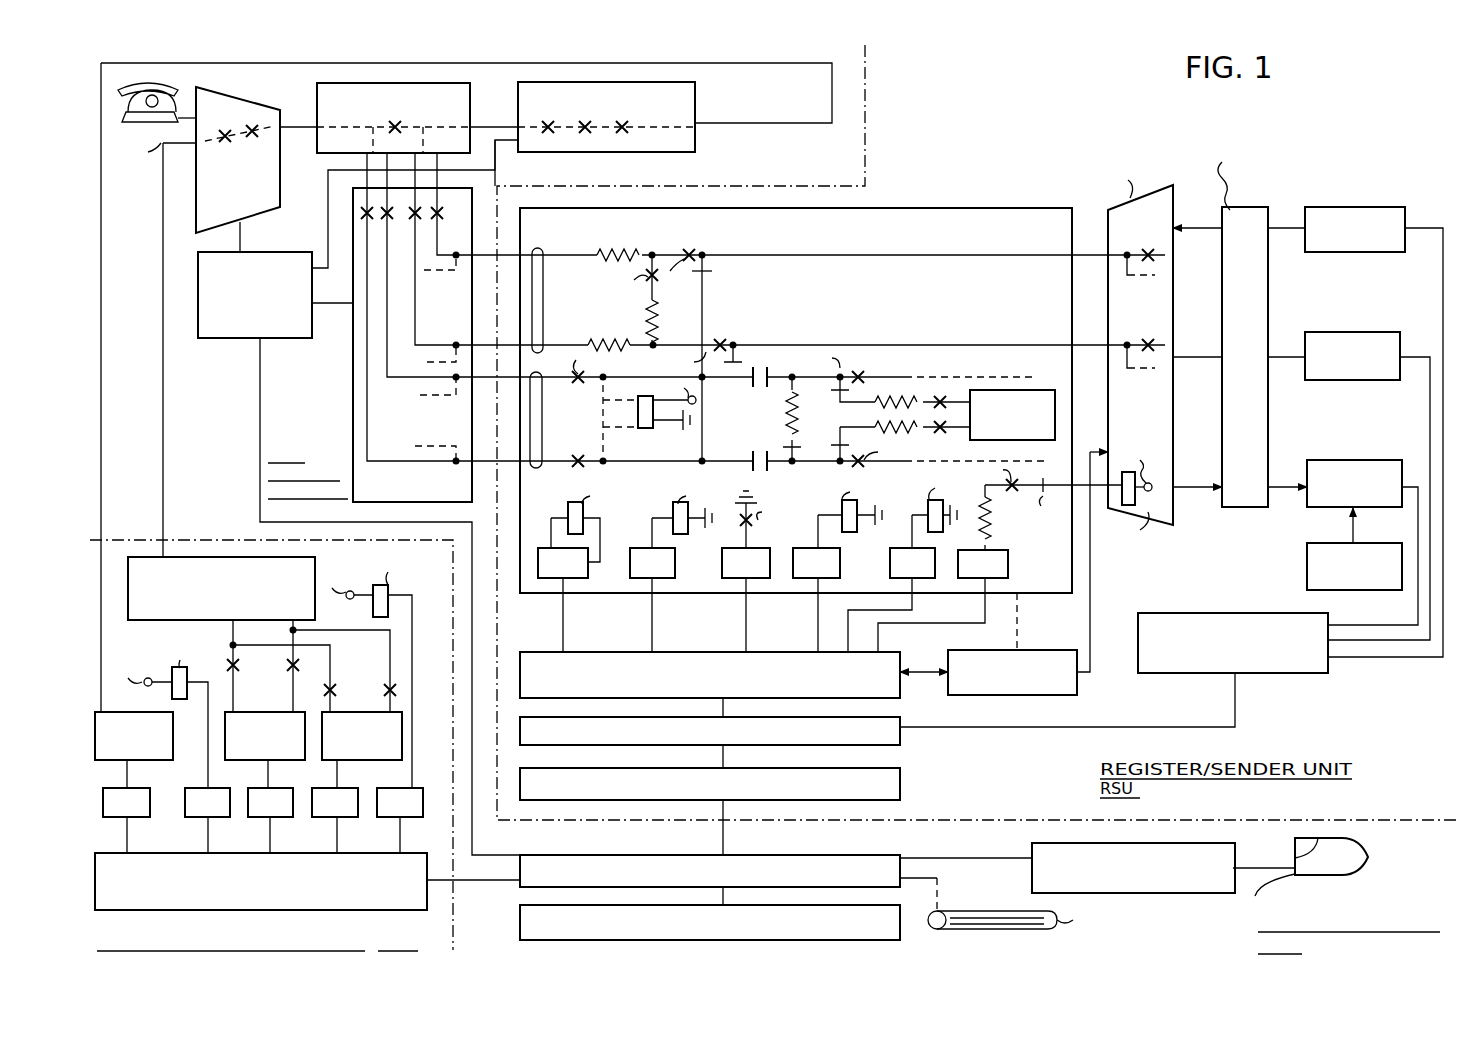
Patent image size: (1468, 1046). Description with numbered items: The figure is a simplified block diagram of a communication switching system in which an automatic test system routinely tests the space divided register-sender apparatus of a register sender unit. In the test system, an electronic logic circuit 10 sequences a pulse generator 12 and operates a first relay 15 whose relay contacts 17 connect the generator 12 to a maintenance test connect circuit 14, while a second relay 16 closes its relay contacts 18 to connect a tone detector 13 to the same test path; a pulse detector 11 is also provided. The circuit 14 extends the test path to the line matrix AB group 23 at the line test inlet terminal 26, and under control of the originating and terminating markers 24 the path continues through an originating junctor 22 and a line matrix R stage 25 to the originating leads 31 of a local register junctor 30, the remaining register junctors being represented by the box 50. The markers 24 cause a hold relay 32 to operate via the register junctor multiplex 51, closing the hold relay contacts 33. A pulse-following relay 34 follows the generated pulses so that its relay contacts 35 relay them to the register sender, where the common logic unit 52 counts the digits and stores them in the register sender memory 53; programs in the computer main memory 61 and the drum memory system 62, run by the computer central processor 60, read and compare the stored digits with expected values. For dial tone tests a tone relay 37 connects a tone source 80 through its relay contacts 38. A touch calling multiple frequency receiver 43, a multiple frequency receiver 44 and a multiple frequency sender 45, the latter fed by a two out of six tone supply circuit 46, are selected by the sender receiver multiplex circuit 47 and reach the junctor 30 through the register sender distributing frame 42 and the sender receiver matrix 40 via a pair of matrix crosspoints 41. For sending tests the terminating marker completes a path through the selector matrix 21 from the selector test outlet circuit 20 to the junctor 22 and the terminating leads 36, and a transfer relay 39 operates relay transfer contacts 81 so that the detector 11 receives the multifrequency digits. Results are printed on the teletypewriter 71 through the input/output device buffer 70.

The electronic logic MRL circuit 10 is at (410, 858).
The pulse detector 11 is at (166, 760).
The pulse generator 12 is at (261, 761).
The tone detector 13 is at (356, 760).
The maintenance test connect circuit 14 is at (150, 622).
The K15 relay 15 is at (173, 694).
The K16 relay 16 is at (390, 592).
The K15 relay contacts 17 is at (289, 674).
The K16 relay contacts 18 is at (386, 684).
The selector test outlet circuit 20 is at (810, 123).
The selector matrix 21 is at (695, 143).
The originating junctor 22 is at (466, 93).
The line matrix AB group 23 is at (243, 93).
The originating and terminating markers 24 is at (250, 252).
The line matrix R stage 25 is at (353, 369).
The line test inlet terminal 26 is at (163, 238).
The local register junctor 30 is at (1040, 198).
The originating leads 31 is at (540, 470).
The K2 hold relay 32 is at (566, 516).
The K2 relay contacts 33 is at (578, 392).
The K5 relay 34 is at (641, 430).
The K5 relay contacts 35 is at (743, 525).
The terminating leads 36 is at (537, 250).
The K10 relay 37 is at (928, 512).
The K10 relay contacts 38 is at (939, 412).
The K3 relay 39 is at (673, 515).
The sender receiver matrix SRM 40 is at (1173, 200).
The matrix crosspoints 41 is at (1148, 265).
The register sender distributing frame 42 is at (1262, 207).
The TCMF receiver 43 is at (1400, 207).
The MF receiver 44 is at (1318, 340).
The MF sender 45 is at (1318, 466).
The tone supply circuit 46 is at (1323, 542).
The sender receiver multiplex circuit SRM 47 is at (1310, 673).
The register junctors 50 is at (1077, 690).
The register junctor multiplex RJM 51 is at (672, 652).
The common logic unit 52 is at (908, 712).
The register sender memory RSM 53 is at (900, 782).
The computer central processor CCP 60 is at (900, 855).
The computer main memory CMM 61 is at (520, 928).
The DMS drum memory system 62 is at (962, 922).
The input/output device buffer 70 is at (1032, 849).
The teletypewriter 71 is at (1350, 845).
The tone source 80 is at (1053, 380).
The K3 relay transfer contacts 81 is at (723, 336).